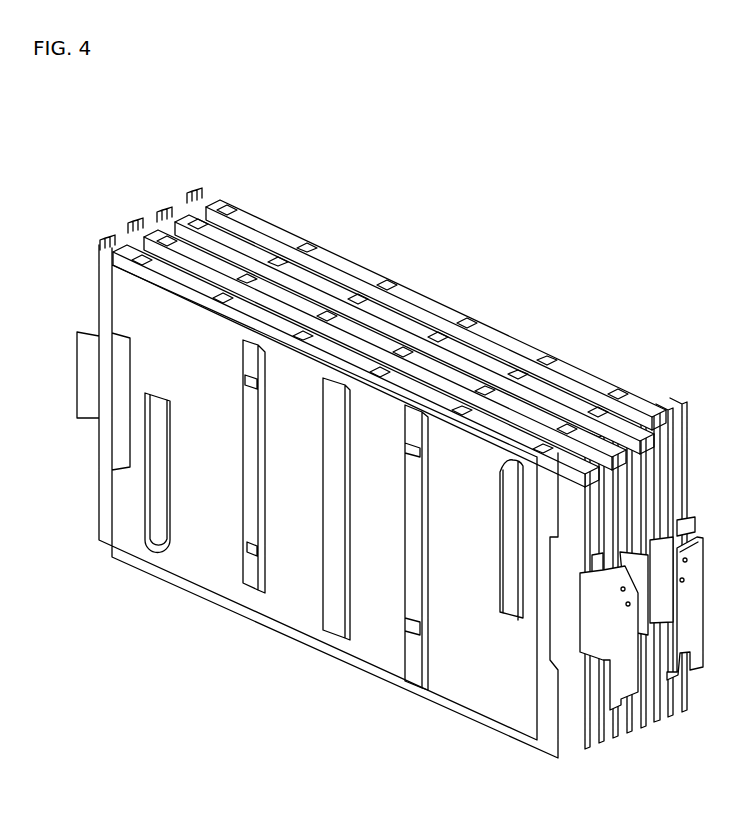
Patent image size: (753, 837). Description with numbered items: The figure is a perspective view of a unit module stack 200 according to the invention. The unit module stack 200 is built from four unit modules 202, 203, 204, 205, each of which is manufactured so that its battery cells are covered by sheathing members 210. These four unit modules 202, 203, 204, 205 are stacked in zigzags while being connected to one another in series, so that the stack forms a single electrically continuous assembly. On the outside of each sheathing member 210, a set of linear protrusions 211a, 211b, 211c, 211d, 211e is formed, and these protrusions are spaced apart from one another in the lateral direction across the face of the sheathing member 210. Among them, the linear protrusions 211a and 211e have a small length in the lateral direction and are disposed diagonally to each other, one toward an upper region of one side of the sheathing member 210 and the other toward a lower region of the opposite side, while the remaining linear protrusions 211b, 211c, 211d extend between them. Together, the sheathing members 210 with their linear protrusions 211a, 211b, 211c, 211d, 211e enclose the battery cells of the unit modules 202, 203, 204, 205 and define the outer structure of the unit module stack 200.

The unit module stack 200 is at (62, 131).
The unit module 202 is at (192, 280).
The unit module 203 is at (322, 308).
The unit module 204 is at (423, 335).
The unit module 205 is at (550, 352).
The sheathing member 210 is at (208, 570).
The linear protrusion 211a is at (507, 538).
The linear protrusion 211b is at (418, 662).
The linear protrusion 211c is at (333, 617).
The linear protrusion 211d is at (255, 568).
The linear protrusion 211e is at (157, 523).